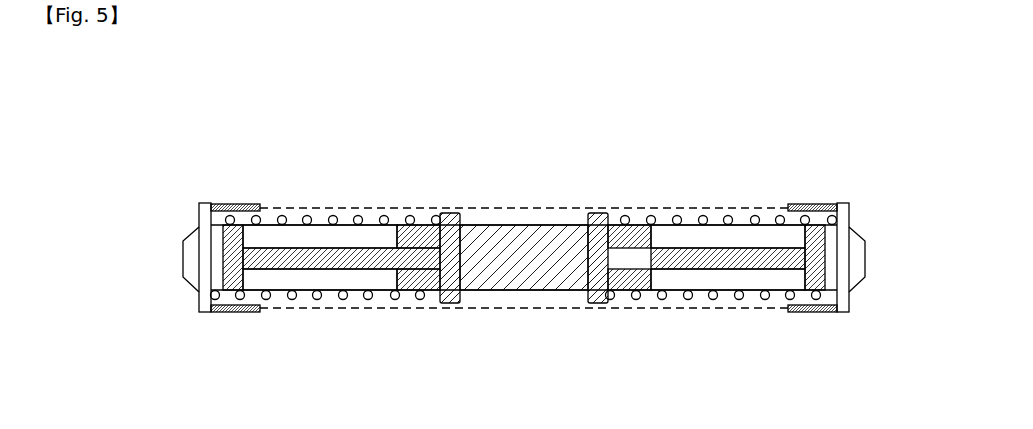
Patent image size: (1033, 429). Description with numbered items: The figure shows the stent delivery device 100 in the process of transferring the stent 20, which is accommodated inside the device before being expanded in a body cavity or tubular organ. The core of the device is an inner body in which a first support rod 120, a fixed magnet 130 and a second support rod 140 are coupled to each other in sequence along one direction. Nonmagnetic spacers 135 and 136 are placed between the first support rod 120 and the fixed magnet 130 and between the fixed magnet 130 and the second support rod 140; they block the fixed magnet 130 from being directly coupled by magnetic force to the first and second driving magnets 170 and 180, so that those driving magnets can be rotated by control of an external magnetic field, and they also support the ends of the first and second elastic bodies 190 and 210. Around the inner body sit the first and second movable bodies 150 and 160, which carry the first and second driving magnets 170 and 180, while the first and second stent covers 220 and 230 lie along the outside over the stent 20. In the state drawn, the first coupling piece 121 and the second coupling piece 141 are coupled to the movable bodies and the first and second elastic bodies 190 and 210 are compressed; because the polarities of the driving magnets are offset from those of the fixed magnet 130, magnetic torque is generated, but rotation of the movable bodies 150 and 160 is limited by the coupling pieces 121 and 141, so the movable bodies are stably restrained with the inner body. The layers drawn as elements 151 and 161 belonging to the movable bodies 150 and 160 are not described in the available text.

The stent delivery device 100 is at (852, 85).
The stent 20 is at (511, 207).
The first support rod 120 is at (345, 250).
The first coupling piece 121 is at (232, 239).
The fixed magnet 130 is at (523, 290).
The spacer 135 is at (450, 303).
The spacer 136 is at (596, 303).
The second support rod 140 is at (685, 252).
The second coupling piece 141 is at (823, 237).
The first movable body 150 is at (305, 291).
The first upper insulating layer 151 is at (297, 238).
The second movable body 160 is at (748, 291).
The second upper insulating layer 161 is at (745, 238).
The first driving magnet 170 is at (412, 291).
The second driving magnet 180 is at (623, 291).
The first elastic body 190 is at (411, 222).
The second elastic body 210 is at (622, 222).
The first stent cover 220 is at (230, 204).
The second stent cover 230 is at (808, 204).